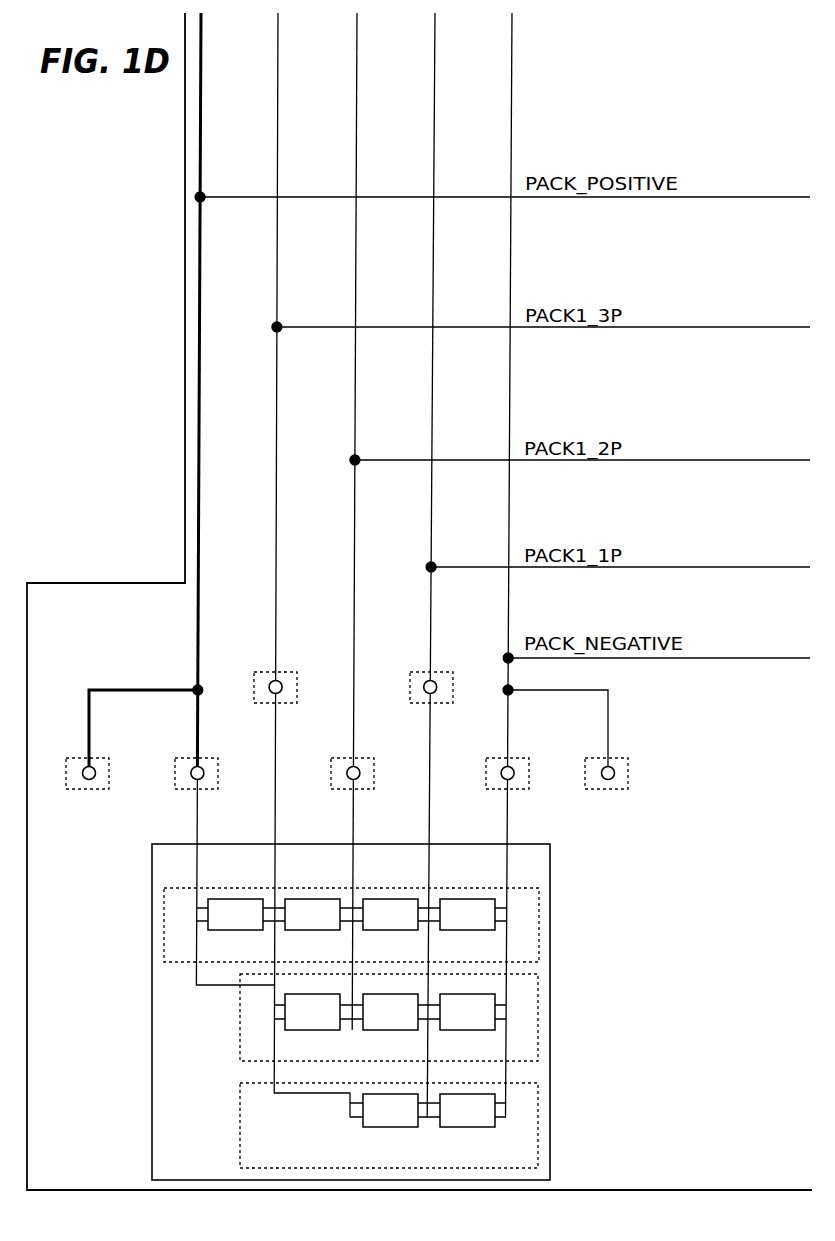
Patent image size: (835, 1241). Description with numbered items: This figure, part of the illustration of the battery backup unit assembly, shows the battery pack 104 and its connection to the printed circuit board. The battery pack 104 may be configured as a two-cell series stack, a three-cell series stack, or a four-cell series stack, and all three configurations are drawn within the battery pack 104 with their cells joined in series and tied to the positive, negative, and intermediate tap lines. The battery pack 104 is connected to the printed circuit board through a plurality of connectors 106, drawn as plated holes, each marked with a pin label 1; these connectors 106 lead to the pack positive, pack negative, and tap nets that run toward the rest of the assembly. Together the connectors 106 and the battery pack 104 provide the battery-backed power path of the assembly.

The pin 1 of connector hole 1 is at (349, 713).
The battery pack 104 is at (152, 912).
The connectors 106 is at (254, 681).